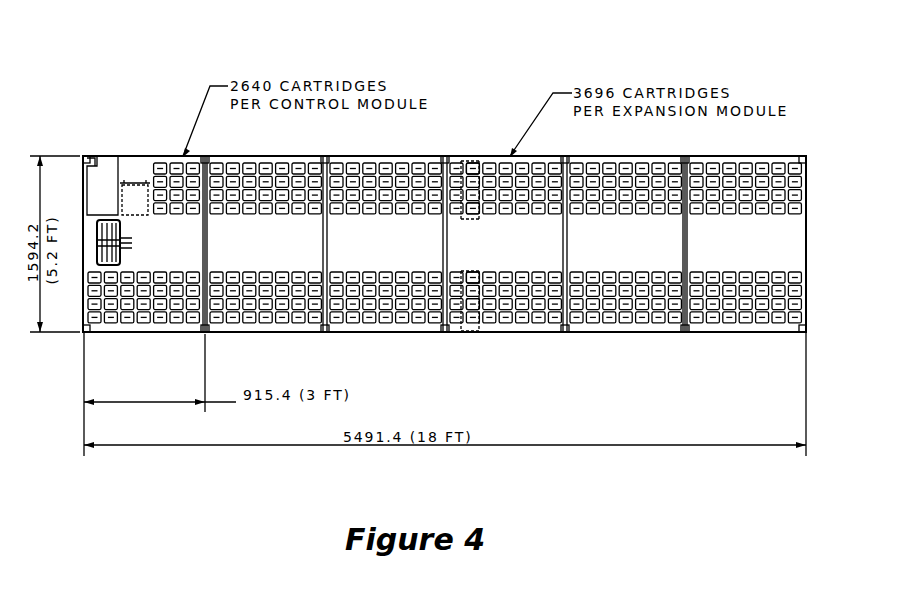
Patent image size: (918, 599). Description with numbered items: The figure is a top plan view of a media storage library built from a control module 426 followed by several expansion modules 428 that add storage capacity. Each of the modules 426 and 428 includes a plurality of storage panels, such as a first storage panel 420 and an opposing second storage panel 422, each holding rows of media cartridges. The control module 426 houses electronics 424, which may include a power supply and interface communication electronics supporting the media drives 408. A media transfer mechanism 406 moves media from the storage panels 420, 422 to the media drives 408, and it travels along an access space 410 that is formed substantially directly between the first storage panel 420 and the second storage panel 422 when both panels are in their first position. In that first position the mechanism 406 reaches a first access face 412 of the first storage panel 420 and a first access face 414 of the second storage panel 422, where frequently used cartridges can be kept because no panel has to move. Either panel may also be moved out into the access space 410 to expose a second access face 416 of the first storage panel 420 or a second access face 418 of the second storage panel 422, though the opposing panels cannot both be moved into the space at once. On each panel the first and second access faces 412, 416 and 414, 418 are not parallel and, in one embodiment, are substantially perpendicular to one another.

The media transfer mechanism 406 is at (128, 260).
The media drives 408 is at (137, 200).
The access space 410 is at (814, 222).
The first access face of the first storage panel 412 is at (472, 214).
The first access face of the second storage panel 414 is at (470, 276).
The second access face of the first storage panel 416 is at (463, 162).
The second access face of the second storage panel 418 is at (478, 305).
The first storage panel 420 is at (470, 161).
The second storage panel 422 is at (473, 334).
The electronics 424 is at (102, 182).
The control module 426 is at (206, 412).
The expansion modules 428 is at (800, 340).